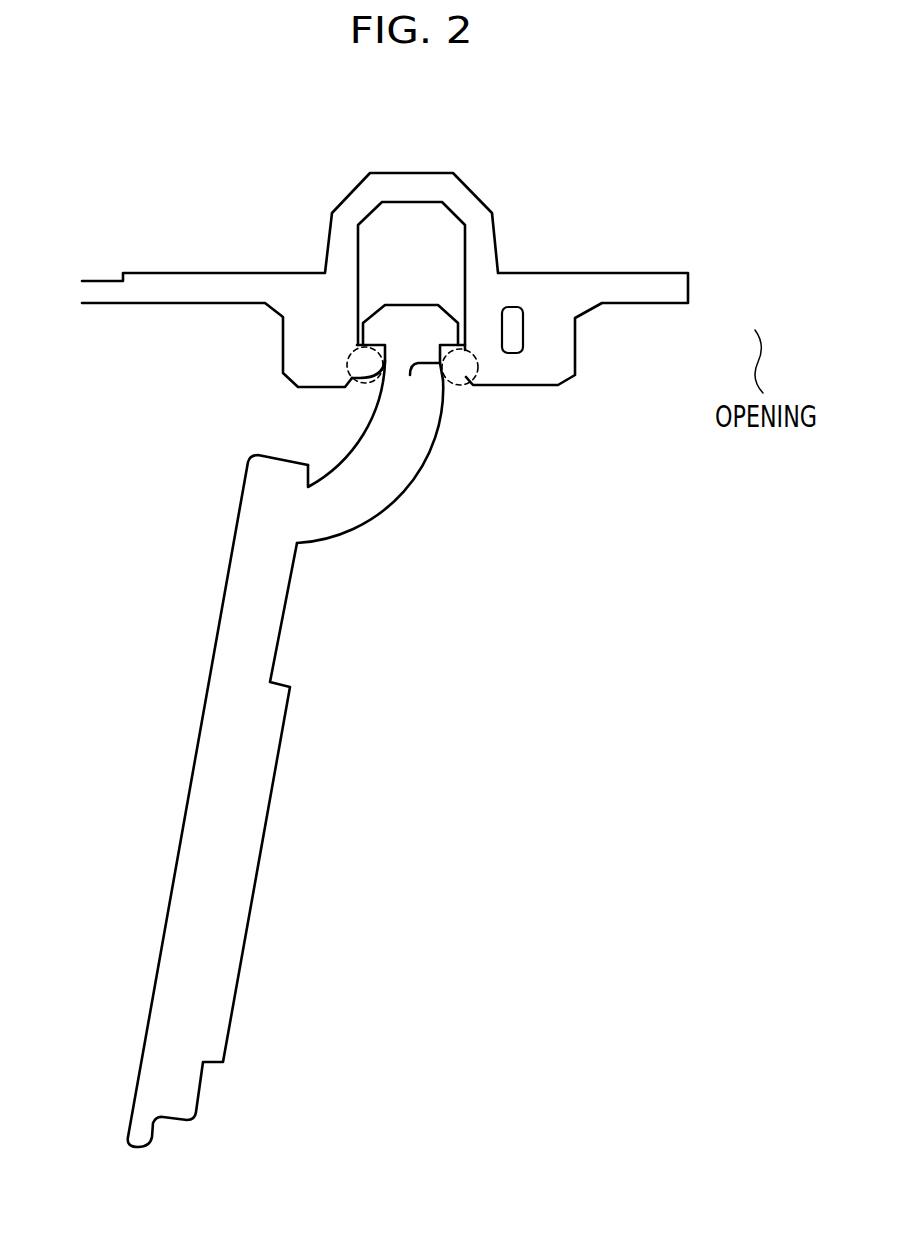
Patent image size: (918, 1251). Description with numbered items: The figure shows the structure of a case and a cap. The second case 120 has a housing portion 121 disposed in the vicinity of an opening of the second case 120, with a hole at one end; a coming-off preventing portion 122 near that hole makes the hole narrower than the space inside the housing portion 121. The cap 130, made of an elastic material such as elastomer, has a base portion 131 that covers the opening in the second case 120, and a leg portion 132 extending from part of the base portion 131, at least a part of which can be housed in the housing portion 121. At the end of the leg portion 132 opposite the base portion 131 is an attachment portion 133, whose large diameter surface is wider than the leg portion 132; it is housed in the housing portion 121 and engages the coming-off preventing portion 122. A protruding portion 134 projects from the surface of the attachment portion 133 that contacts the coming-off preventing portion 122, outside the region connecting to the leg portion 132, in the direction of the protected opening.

The second case 120 is at (720, 287).
The housing portion 121 is at (378, 225).
The coming-off preventing portion 122 is at (352, 384).
The cap 130 is at (267, 746).
The base portion 131 is at (173, 962).
The leg portion 132 is at (347, 512).
The attachment portion 133 is at (437, 317).
The protruding portion 134 is at (408, 381).